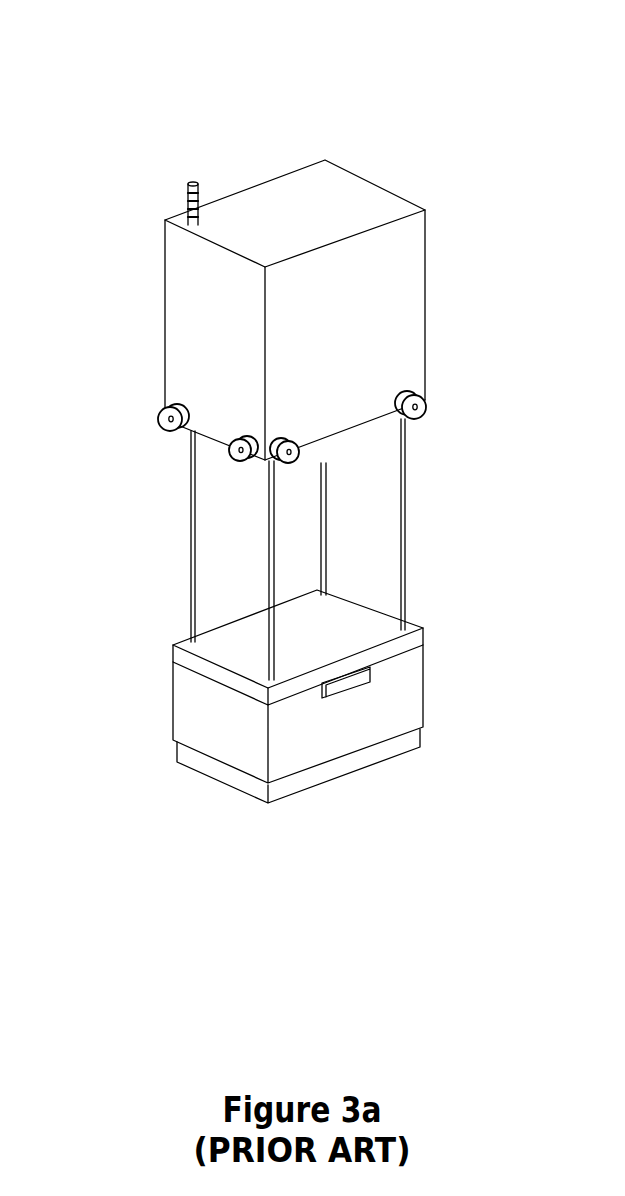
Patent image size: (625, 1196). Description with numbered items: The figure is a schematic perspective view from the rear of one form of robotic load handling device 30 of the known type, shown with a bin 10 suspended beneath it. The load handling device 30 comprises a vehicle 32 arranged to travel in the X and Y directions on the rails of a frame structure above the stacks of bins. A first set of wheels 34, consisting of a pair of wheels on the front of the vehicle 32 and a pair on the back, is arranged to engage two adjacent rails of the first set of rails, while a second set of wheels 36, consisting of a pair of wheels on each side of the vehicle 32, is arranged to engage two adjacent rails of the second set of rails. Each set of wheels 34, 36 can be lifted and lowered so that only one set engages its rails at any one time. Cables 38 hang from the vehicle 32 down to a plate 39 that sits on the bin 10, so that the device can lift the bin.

The load handling device 30 is at (135, 106).
The vehicle 32 is at (367, 292).
The first set of wheels 34 is at (424, 407).
The second set of wheels 36 is at (163, 405).
The cable 38 is at (405, 526).
The platform plate 39 is at (367, 633).
The base unit 10 is at (395, 715).